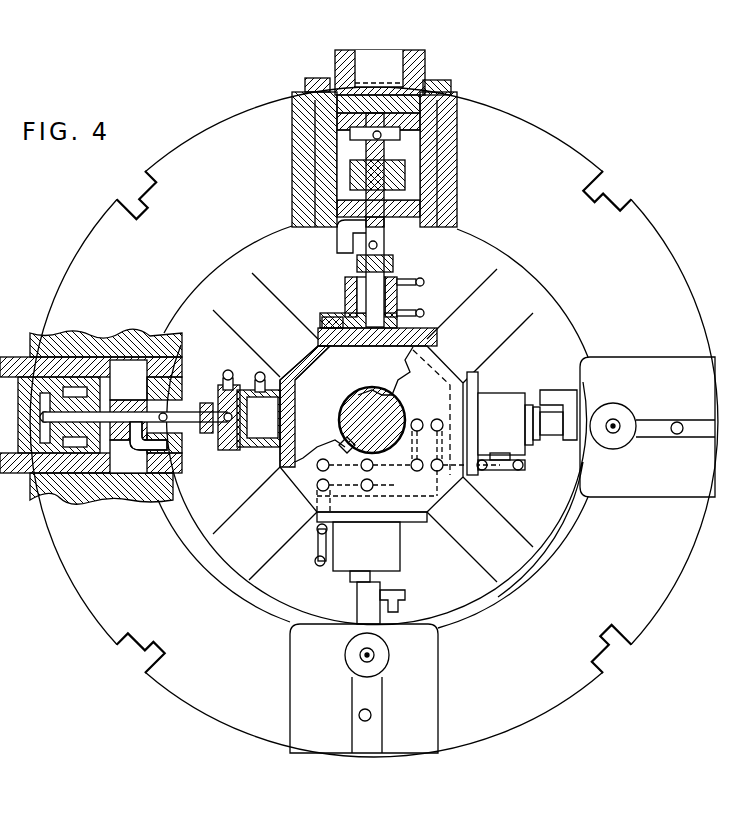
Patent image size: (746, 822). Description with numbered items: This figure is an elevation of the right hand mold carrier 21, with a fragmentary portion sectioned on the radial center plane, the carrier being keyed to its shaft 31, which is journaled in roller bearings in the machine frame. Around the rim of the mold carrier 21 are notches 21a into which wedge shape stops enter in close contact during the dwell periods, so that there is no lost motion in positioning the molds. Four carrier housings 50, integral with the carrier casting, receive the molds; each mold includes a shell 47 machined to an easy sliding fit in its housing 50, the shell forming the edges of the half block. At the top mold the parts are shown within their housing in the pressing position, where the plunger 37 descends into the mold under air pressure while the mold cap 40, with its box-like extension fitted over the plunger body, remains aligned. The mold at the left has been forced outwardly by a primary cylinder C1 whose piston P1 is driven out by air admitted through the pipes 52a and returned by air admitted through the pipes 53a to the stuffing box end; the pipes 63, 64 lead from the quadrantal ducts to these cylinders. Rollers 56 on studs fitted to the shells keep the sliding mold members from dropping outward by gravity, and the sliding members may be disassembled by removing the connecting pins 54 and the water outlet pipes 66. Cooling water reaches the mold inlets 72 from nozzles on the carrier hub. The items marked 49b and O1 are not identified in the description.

The mold carrier 21 is at (562, 512).
The notch 21a is at (128, 200).
The shaft 31 is at (365, 396).
The plunger 37 is at (415, 52).
The mold cap 40 is at (440, 78).
The shell 47 is at (457, 164).
The pin 49b is at (393, 246).
The carrier housing 50 is at (640, 497).
The pipe 52a is at (262, 372).
The pipe 53a is at (228, 370).
The connecting pin 54 is at (170, 412).
The roller 56 is at (620, 415).
The pipe 63 is at (374, 466).
The pipe 64 is at (373, 486).
The water outlet pipe 66 is at (677, 434).
The mold inlet 72 is at (337, 242).
The primary cylinder C1 is at (345, 290).
The piston P1 is at (249, 417).
The fitting O1 is at (236, 440).